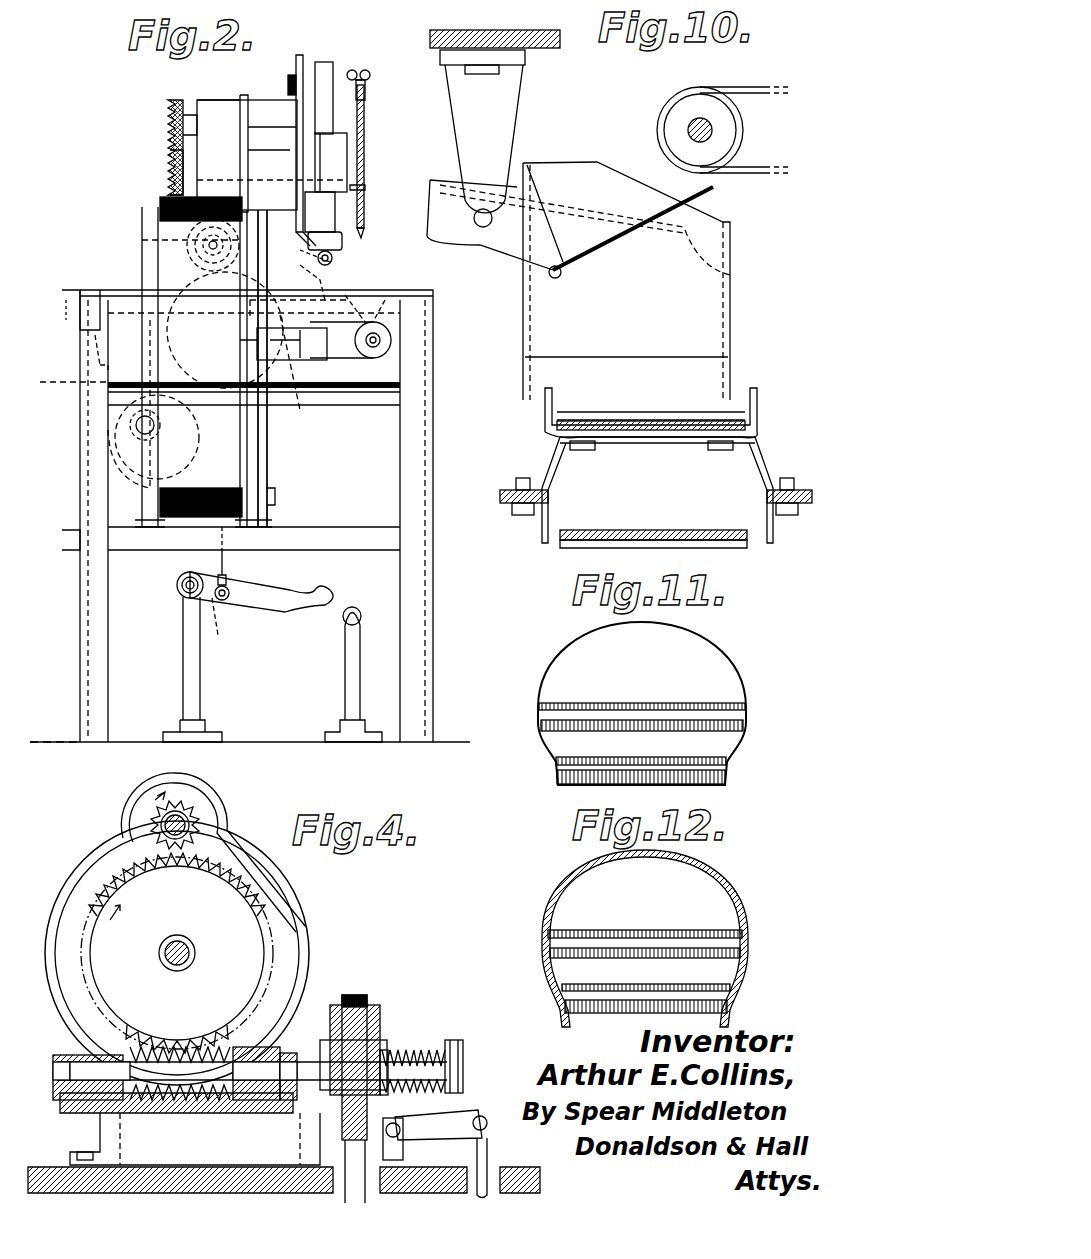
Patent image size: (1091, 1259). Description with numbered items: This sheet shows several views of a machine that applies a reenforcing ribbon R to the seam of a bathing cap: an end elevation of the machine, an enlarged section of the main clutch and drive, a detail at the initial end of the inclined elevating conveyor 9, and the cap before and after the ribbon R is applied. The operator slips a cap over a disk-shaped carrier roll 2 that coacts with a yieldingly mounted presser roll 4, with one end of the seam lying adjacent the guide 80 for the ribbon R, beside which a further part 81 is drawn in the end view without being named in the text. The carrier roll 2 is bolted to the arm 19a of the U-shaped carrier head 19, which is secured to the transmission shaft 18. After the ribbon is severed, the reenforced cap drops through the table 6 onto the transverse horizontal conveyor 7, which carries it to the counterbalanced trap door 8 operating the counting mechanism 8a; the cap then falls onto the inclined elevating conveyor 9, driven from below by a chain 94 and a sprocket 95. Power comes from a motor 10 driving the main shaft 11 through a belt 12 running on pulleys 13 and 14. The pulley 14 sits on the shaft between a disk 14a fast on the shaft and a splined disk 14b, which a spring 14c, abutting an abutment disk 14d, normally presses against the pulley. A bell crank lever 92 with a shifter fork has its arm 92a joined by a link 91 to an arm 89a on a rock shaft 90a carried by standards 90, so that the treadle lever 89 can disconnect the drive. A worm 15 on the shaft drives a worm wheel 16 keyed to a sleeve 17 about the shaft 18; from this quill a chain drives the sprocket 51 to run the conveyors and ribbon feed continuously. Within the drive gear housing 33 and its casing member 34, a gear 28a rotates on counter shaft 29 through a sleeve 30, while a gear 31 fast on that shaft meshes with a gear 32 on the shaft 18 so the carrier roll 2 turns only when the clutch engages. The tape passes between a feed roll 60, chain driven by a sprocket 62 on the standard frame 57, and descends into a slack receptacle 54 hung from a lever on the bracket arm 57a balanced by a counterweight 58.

In FIG. 2, the carrier roll 2 is at (366, 214).
In FIG. 2, the presser roll 4 is at (366, 98).
In FIG. 2, the table 6 is at (405, 292).
In FIG. 4, the table 6 is at (190, 1175).
In FIG. 2, the transverse horizontal conveyor 7 is at (365, 358).
In FIG. 10, the transverse horizontal conveyor 7 is at (735, 88).
In FIG. 2, the trap door 8 is at (268, 405).
In FIG. 10, the trap door 8 is at (732, 276).
In FIG. 2, the counting mechanism 8a is at (305, 278).
In FIG. 2, the inclined elevating conveyor 9 is at (170, 253).
In FIG. 10, the inclined elevating conveyor 9 is at (645, 420).
In FIG. 2, the motor 10 is at (122, 460).
In FIG. 2, the main shaft 11 is at (160, 238).
In FIG. 4, the main shaft 11 is at (95, 1070).
In FIG. 2, the belt 12 is at (155, 333).
In FIG. 4, the belt 12 is at (355, 995).
In FIG. 2, the belt pulley 13 is at (112, 420).
In FIG. 2, the belt pulley 14 is at (160, 202).
In FIG. 4, the belt pulley 14 is at (378, 1012).
In FIG. 4, the disk 14a is at (330, 1018).
In FIG. 4, the disk 14b is at (385, 1030).
In FIG. 4, the spring 14c is at (430, 1052).
In FIG. 4, the abutment disk 14d is at (464, 1050).
In FIG. 4, the worm 15 is at (175, 1050).
In FIG. 4, the worm wheel 16 is at (233, 868).
In FIG. 4, the sleeve 17 is at (185, 945).
In FIG. 4, the transmission shaft 18 is at (189, 958).
In FIG. 2, the carrier head 19 is at (322, 163).
In FIG. 2, the carrier head arm 19a is at (365, 185).
In FIG. 10, the carrier head arm 19a is at (550, 221).
In FIG. 4, the gear 28a is at (195, 818).
In FIG. 4, the counter shaft 29 is at (160, 820).
In FIG. 4, the sleeve 30 is at (165, 826).
In FIG. 2, the gear 31 is at (170, 112).
In FIG. 2, the gear 32 is at (172, 172).
In FIG. 2, the drive gear housing 33 is at (222, 103).
In FIG. 4, the drive gear housing 33 is at (70, 872).
In FIG. 2, the casing member 34 is at (292, 108).
In FIG. 2, the sprocket 51 is at (295, 360).
In FIG. 2, the receptacle 54 is at (344, 245).
In FIG. 2, the standard frame 57 is at (300, 55).
In FIG. 2, the bracket arm 57a is at (292, 244).
In FIG. 2, the counterweight 58 is at (333, 262).
In FIG. 2, the feed roll 60 is at (324, 66).
In FIG. 2, the sprocket 62 is at (292, 78).
In FIG. 2, the guide 80 is at (367, 74).
In FIG. 2, the screw rod 81 is at (367, 110).
In FIG. 2, the treadle lever 89 is at (283, 610).
In FIG. 2, the arm 89a is at (232, 629).
In FIG. 2, the standards 90 is at (183, 656).
In FIG. 2, the rock shaft 90a is at (178, 585).
In FIG. 2, the link 91 is at (228, 568).
In FIG. 4, the link 91 is at (475, 1156).
In FIG. 4, the bell crank lever 92 is at (400, 1122).
In FIG. 4, the arm 92a is at (455, 1116).
In FIG. 2, the chain 94 is at (270, 450).
In FIG. 2, the sprocket 95 is at (276, 497).
In FIG. 12, the ribbon R is at (545, 917).